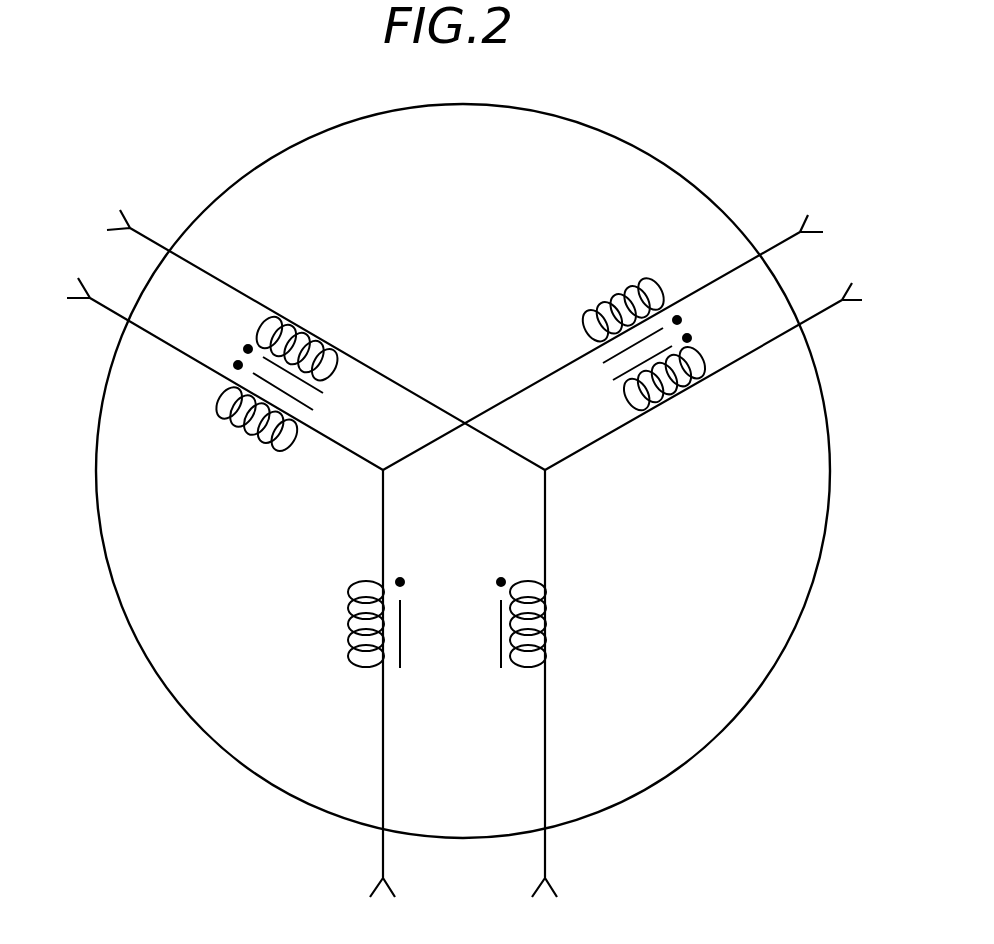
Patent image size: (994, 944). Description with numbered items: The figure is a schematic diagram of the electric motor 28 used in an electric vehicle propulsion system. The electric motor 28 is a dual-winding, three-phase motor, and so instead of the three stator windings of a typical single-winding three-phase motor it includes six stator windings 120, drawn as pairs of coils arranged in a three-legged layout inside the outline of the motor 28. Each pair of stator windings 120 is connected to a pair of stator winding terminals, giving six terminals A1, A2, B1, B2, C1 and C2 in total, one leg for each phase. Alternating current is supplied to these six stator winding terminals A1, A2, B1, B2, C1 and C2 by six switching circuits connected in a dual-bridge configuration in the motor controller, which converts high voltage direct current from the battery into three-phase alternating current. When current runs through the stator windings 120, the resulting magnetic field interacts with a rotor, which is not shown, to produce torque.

The stator windings 120 is at (295, 325).
The electric motor 28 is at (812, 588).
The stator winding terminal A1 is at (212, 369).
The stator winding terminal A2 is at (314, 333).
The stator winding terminal B1 is at (383, 701).
The stator winding terminal B2 is at (545, 701).
The stator winding terminal C1 is at (614, 334).
The stator winding terminal C2 is at (715, 371).